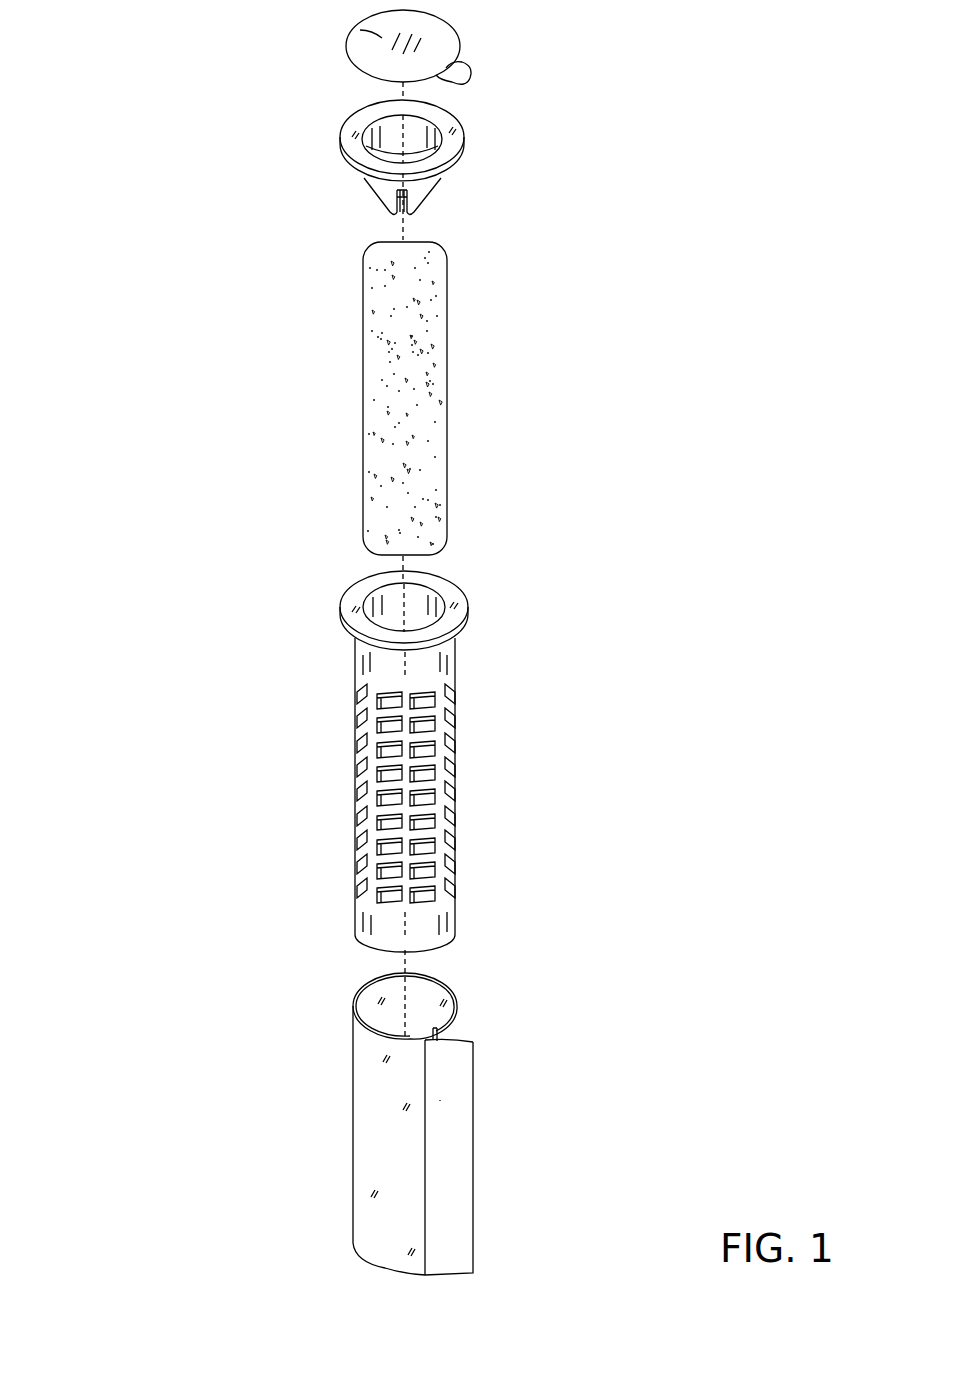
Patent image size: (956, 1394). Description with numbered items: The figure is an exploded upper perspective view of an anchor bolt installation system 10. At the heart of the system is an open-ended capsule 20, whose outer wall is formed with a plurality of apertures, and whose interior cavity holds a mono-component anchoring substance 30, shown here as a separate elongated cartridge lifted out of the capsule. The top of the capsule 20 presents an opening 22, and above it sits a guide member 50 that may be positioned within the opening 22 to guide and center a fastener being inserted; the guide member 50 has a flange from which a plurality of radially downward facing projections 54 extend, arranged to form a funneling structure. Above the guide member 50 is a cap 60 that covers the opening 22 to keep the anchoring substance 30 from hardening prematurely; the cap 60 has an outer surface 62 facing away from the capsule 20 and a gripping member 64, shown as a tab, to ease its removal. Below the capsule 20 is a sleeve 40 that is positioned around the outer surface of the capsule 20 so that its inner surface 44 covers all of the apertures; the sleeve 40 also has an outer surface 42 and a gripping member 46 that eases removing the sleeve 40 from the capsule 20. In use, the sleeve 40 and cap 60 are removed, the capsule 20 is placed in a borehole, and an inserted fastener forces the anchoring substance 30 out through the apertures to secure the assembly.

The anchor bolt installation system 10 is at (162, 212).
The open-ended capsule 20 is at (457, 650).
The opening 22 is at (410, 595).
The mono-component anchoring substance 30 is at (430, 435).
The sleeve 40 is at (453, 1027).
The outer surface 42 is at (372, 1137).
The inner surface 44 is at (418, 992).
The gripping member 46 is at (458, 1143).
The guide member 50 is at (465, 120).
The projections 54 is at (427, 205).
The cap 60 is at (460, 40).
The outer surface 62 is at (370, 45).
The gripping member 64 is at (467, 80).